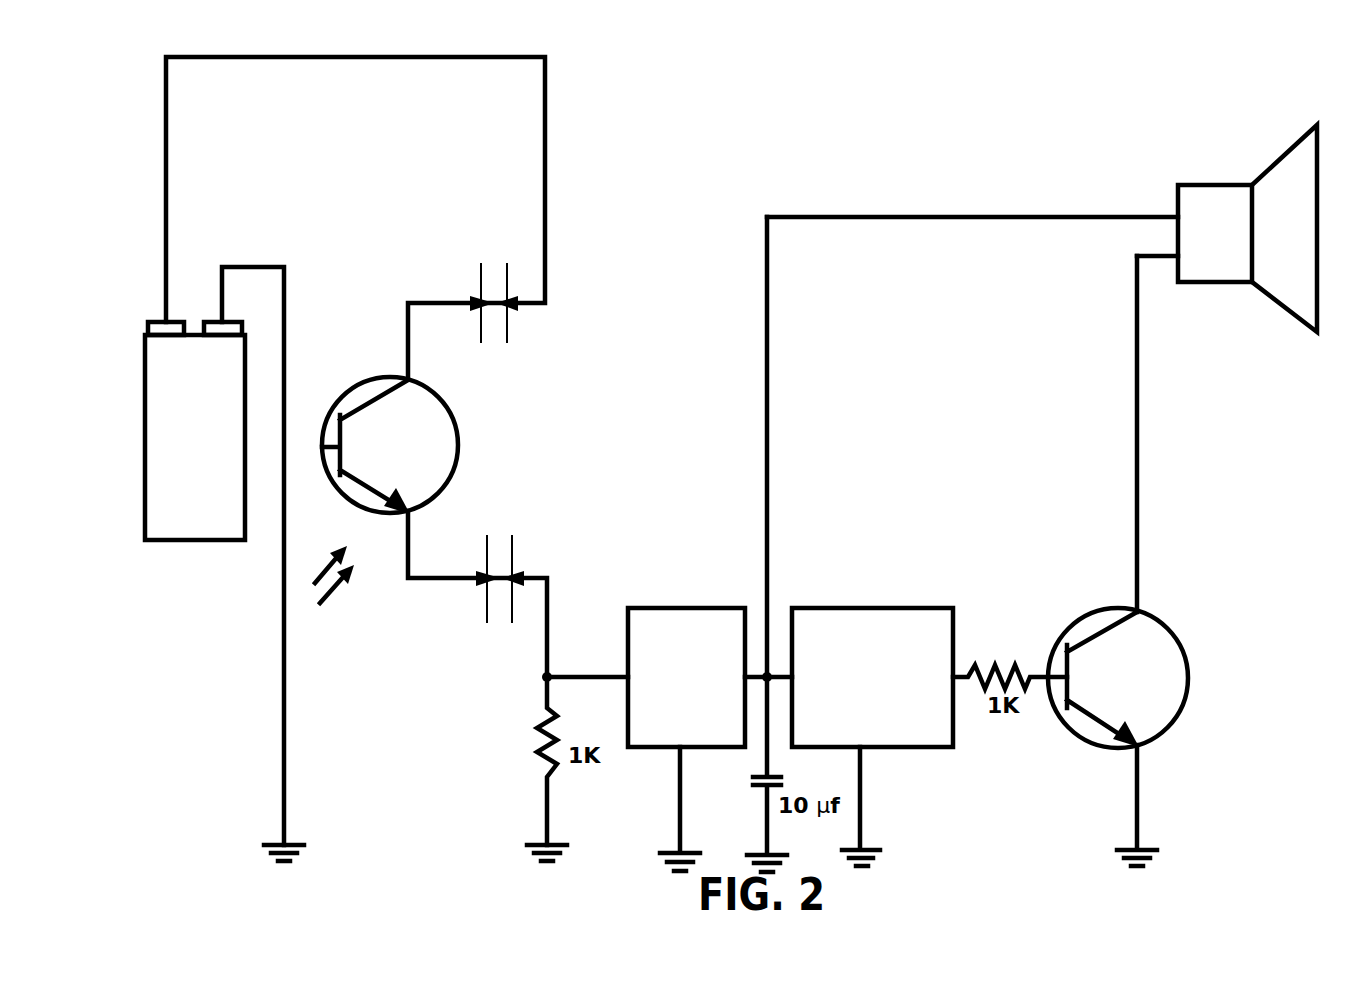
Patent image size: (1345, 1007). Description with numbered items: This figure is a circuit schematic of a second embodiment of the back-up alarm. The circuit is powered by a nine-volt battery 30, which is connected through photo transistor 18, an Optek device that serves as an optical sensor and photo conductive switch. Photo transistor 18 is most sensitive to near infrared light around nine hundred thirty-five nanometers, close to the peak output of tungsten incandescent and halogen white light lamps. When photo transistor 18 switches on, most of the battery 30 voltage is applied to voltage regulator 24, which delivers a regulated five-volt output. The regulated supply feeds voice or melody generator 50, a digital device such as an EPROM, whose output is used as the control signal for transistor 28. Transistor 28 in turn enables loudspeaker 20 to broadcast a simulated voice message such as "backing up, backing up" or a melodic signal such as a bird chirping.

The photo transistor 18 is at (345, 388).
The loudspeaker 20 is at (1217, 283).
The voltage regulator 24 is at (678, 607).
The transistor 28 is at (1180, 705).
The battery 30 is at (185, 541).
The voice or melody generator 50 is at (897, 607).